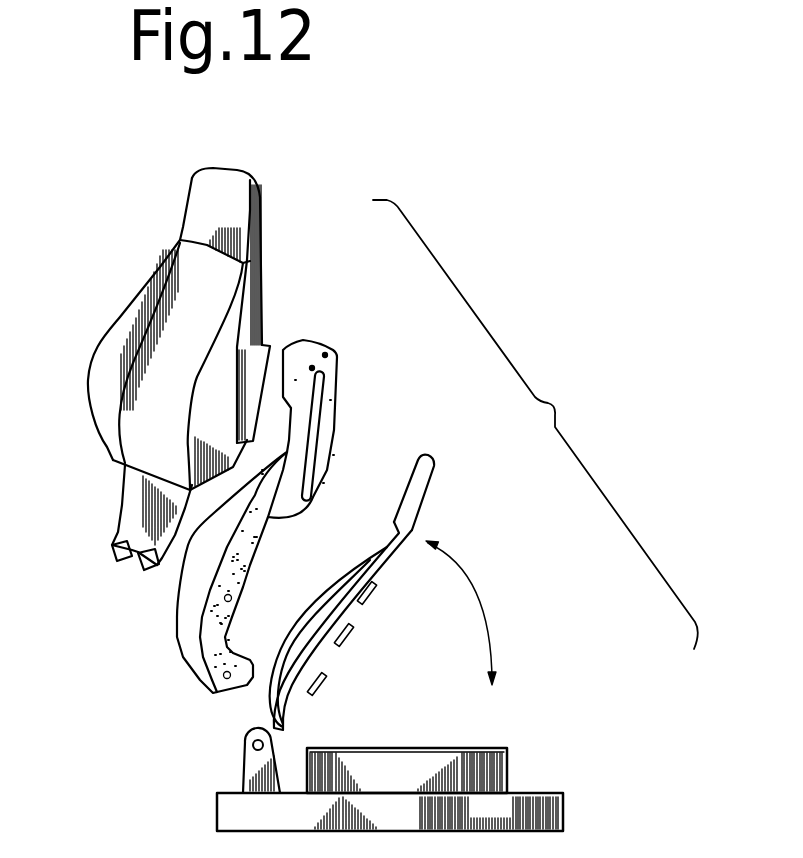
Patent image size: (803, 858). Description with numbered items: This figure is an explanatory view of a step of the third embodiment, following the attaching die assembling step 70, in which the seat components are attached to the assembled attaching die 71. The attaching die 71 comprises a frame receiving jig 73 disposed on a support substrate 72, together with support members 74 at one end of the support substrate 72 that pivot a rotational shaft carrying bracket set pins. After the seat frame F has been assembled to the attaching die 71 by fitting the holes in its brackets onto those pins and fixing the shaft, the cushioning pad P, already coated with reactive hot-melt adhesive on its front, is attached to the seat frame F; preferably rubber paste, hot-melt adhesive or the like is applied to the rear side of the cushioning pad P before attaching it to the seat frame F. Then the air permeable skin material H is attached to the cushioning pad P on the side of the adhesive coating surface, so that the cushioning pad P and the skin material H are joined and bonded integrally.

The attaching die assembling step 70 is at (108, 145).
The skin material H is at (263, 258).
The cushioning pad P is at (338, 392).
The seat frame F is at (433, 489).
The attaching die 71 is at (632, 714).
The support substrate 72 is at (557, 817).
The frame receiving jig 73 is at (500, 770).
The support members 74 is at (250, 771).